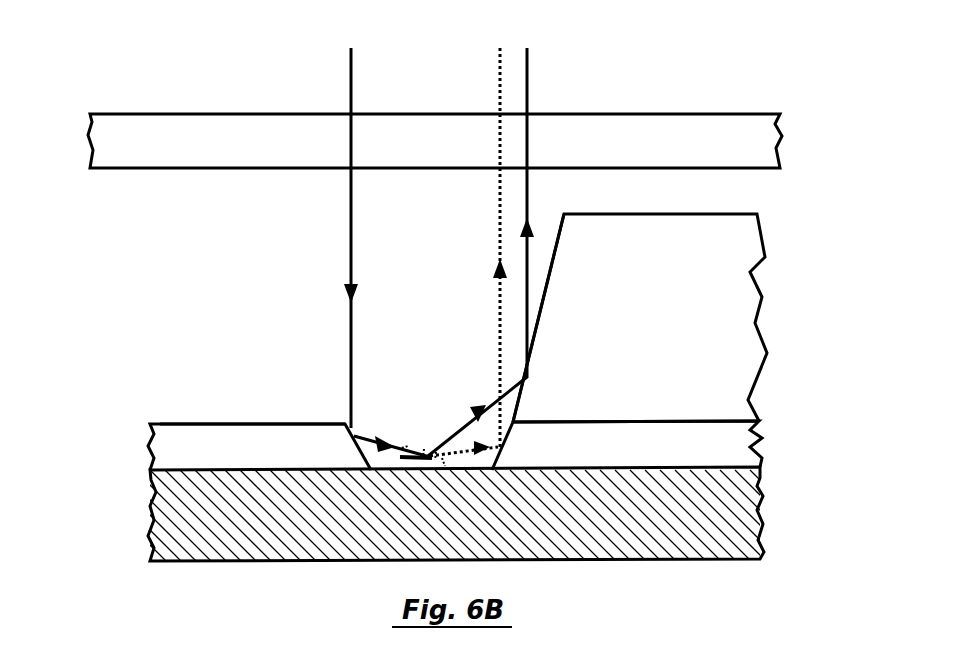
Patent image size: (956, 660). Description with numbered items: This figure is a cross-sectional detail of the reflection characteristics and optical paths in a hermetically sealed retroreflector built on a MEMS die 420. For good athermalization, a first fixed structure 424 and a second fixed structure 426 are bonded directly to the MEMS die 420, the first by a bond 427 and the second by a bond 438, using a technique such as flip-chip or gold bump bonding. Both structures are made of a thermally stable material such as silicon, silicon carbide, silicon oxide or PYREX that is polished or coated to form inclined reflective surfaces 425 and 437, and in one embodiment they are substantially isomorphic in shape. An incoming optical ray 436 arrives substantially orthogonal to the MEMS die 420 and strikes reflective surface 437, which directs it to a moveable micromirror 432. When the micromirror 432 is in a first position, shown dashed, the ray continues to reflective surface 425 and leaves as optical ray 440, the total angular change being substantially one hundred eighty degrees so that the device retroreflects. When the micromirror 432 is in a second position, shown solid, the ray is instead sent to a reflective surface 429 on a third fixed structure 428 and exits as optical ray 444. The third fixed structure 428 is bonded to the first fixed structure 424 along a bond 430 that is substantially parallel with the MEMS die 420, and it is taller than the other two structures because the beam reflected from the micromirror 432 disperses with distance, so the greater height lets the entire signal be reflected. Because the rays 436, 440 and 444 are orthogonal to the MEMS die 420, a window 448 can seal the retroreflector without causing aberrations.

The MEMS die 420 is at (740, 513).
The first fixed structure 424 is at (740, 440).
The reflective surface 425 is at (503, 415).
The second fixed structure 426 is at (168, 450).
The bond 427 is at (605, 465).
The third fixed structure 428 is at (723, 288).
The reflective surface 429 is at (548, 255).
The bond 430 is at (645, 421).
The moveable micromirror 432 is at (418, 450).
The incoming optical ray 436 is at (350, 92).
The reflective surface 437 is at (355, 437).
The bond 438 is at (295, 468).
The optical ray 440 is at (498, 88).
The optical ray 444 is at (528, 82).
The window 448 is at (710, 112).